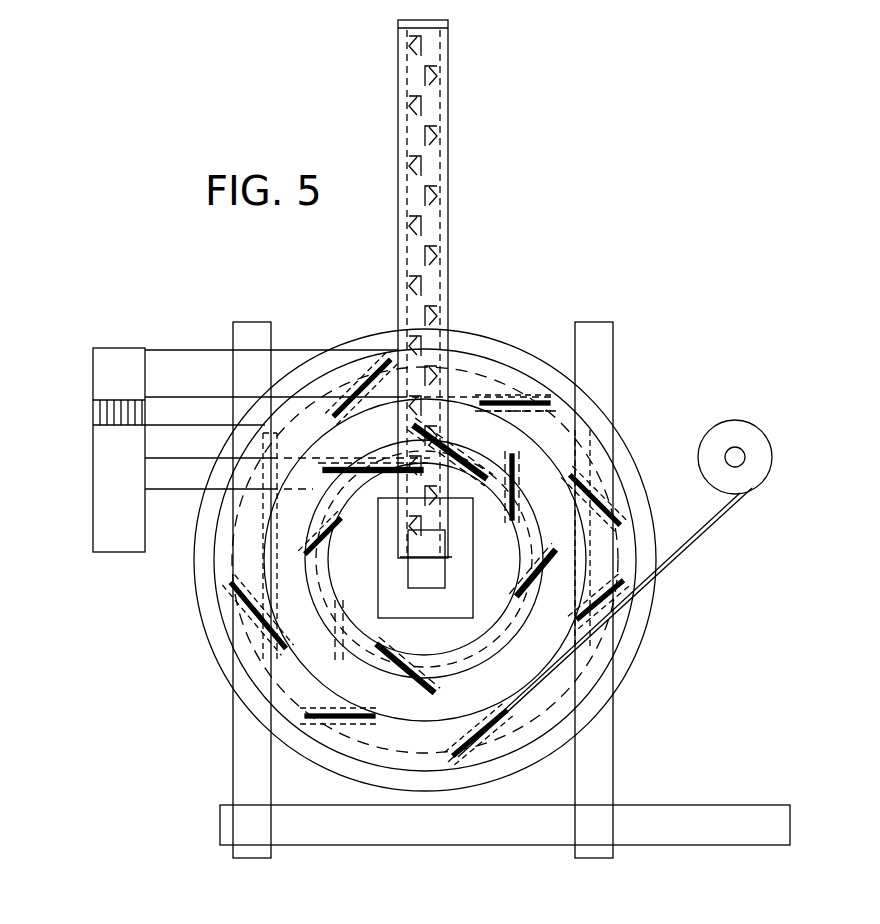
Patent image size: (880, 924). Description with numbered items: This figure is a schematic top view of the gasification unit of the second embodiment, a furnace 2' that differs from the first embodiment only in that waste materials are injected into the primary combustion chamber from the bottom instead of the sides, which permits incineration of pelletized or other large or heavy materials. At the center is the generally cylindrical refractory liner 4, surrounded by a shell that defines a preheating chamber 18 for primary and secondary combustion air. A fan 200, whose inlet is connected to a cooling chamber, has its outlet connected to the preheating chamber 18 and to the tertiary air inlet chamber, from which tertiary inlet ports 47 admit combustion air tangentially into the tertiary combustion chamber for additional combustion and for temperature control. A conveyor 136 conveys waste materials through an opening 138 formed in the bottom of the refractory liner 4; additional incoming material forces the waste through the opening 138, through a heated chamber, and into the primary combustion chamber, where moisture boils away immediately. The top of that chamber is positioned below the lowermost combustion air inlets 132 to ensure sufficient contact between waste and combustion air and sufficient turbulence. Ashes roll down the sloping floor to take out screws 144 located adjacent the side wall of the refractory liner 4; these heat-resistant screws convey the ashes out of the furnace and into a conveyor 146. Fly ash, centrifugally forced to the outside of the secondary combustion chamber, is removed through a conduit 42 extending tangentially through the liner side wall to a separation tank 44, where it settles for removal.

The furnace 2' is at (716, 731).
The refractory liner 4 is at (512, 412).
The preheating chamber 18 is at (615, 608).
The conduit 42 is at (698, 528).
The separation tank 44 is at (748, 422).
The tertiary inlet ports 47 is at (305, 556).
The lowermost combustion air inlets 132 is at (255, 617).
The conveyor 136 is at (448, 33).
The opening 138 is at (413, 578).
The take out screws 144 is at (613, 785).
The conveyor 146 is at (505, 850).
The fan 200 is at (70, 425).